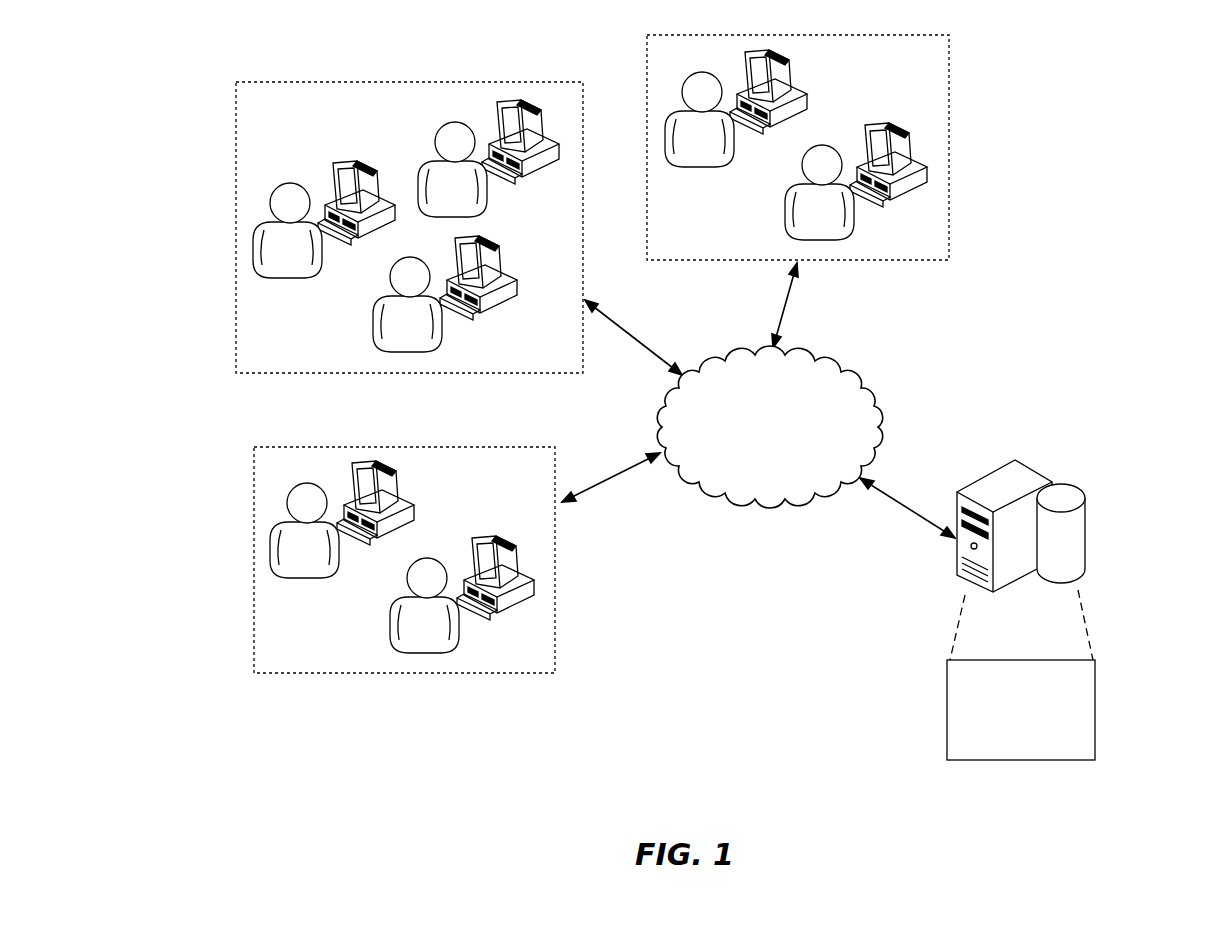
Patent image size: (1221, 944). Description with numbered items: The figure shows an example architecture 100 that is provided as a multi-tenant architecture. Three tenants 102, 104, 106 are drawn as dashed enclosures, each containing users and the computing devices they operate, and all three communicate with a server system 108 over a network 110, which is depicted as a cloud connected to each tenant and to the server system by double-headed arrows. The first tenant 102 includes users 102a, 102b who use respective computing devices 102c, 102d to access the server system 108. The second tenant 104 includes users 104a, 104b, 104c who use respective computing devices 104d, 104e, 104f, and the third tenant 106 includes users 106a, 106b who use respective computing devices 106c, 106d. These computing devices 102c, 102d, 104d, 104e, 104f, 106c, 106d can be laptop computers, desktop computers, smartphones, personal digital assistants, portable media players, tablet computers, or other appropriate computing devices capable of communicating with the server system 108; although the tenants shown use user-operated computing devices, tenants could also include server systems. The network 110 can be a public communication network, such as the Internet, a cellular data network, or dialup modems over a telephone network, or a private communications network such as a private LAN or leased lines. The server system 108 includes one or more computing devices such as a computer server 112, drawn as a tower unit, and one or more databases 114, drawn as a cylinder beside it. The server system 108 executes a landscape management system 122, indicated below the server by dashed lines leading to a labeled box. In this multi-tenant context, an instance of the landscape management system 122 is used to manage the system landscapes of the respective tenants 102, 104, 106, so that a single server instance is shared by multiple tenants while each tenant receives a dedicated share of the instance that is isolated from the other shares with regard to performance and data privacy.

The example architecture 100 is at (1100, 268).
The tenant 102 is at (254, 560).
The user 102a is at (298, 579).
The user 102b is at (392, 640).
The computing device 102c is at (405, 493).
The computing device 102d is at (478, 538).
The tenant 104 is at (236, 222).
The user 104a is at (278, 182).
The user 104b is at (375, 320).
The user 104c is at (458, 120).
The computing device 104d is at (348, 162).
The computing device 104e is at (497, 240).
The computing device 104f is at (540, 102).
The tenant 106 is at (949, 130).
The user 106a is at (700, 166).
The user 106b is at (790, 225).
The computing device 106c is at (800, 80).
The computing device 106d is at (870, 125).
The server system 108 is at (1077, 445).
The network 110 is at (872, 398).
The computer server 112 is at (1003, 462).
The database 114 is at (1087, 530).
The landscape management system 122 is at (1097, 702).